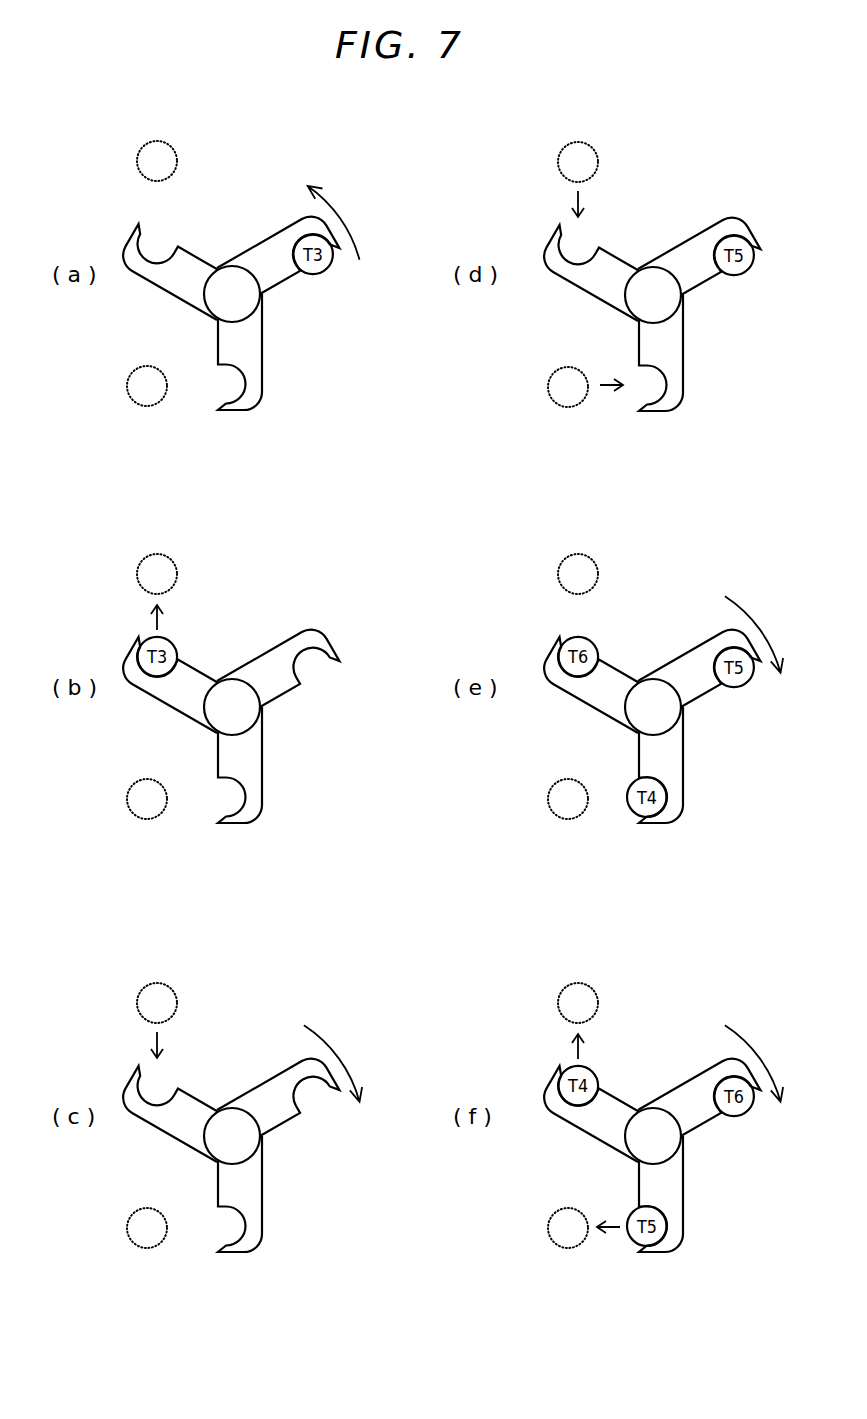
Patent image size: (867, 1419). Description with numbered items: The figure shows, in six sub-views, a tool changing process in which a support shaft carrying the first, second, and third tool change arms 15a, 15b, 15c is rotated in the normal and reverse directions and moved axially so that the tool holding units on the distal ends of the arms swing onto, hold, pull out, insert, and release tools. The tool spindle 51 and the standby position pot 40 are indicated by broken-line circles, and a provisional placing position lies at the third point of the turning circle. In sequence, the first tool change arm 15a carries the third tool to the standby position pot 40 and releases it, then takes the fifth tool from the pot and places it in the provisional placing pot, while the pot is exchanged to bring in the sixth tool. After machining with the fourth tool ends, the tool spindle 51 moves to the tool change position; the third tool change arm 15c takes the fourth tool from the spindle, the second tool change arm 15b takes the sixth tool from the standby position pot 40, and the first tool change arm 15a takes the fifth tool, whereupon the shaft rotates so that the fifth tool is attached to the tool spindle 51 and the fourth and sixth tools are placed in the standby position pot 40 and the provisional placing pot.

The first tool change arm 15a is at (439, 728).
The second tool change arm 15b is at (439, 738).
The third tool change arm 15c is at (476, 743).
The standby position pot 40 is at (393, 578).
The tool spindle 51 is at (354, 782).